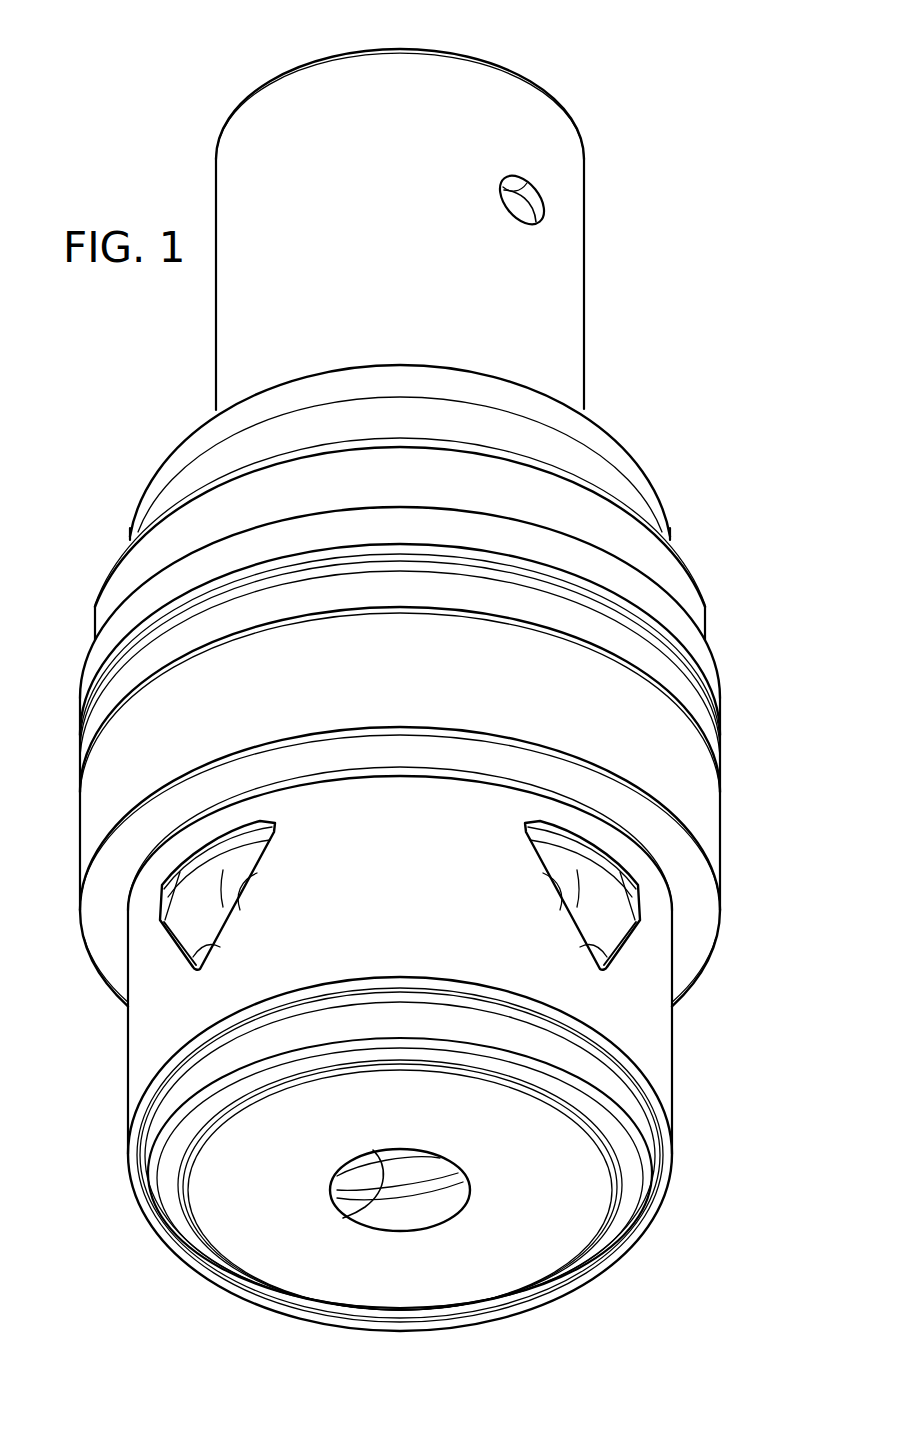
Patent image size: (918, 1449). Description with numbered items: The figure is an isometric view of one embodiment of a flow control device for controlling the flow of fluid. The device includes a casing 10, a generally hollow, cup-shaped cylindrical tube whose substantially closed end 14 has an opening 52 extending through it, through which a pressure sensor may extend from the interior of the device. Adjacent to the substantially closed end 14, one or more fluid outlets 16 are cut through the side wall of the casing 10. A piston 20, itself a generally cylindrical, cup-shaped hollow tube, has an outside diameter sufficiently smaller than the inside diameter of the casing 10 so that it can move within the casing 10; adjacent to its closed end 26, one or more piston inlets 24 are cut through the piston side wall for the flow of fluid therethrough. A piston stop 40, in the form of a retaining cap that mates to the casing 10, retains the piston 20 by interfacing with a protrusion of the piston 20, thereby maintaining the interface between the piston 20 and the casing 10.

The casing 10 is at (722, 840).
The substantially closed end 14 is at (400, 1166).
The fluid outlets 16 is at (605, 968).
The piston 20 is at (431, 209).
The piston inlets 24 is at (527, 180).
The closed end 26 is at (481, 57).
The piston stop 40 is at (612, 440).
The opening 52 is at (365, 1207).